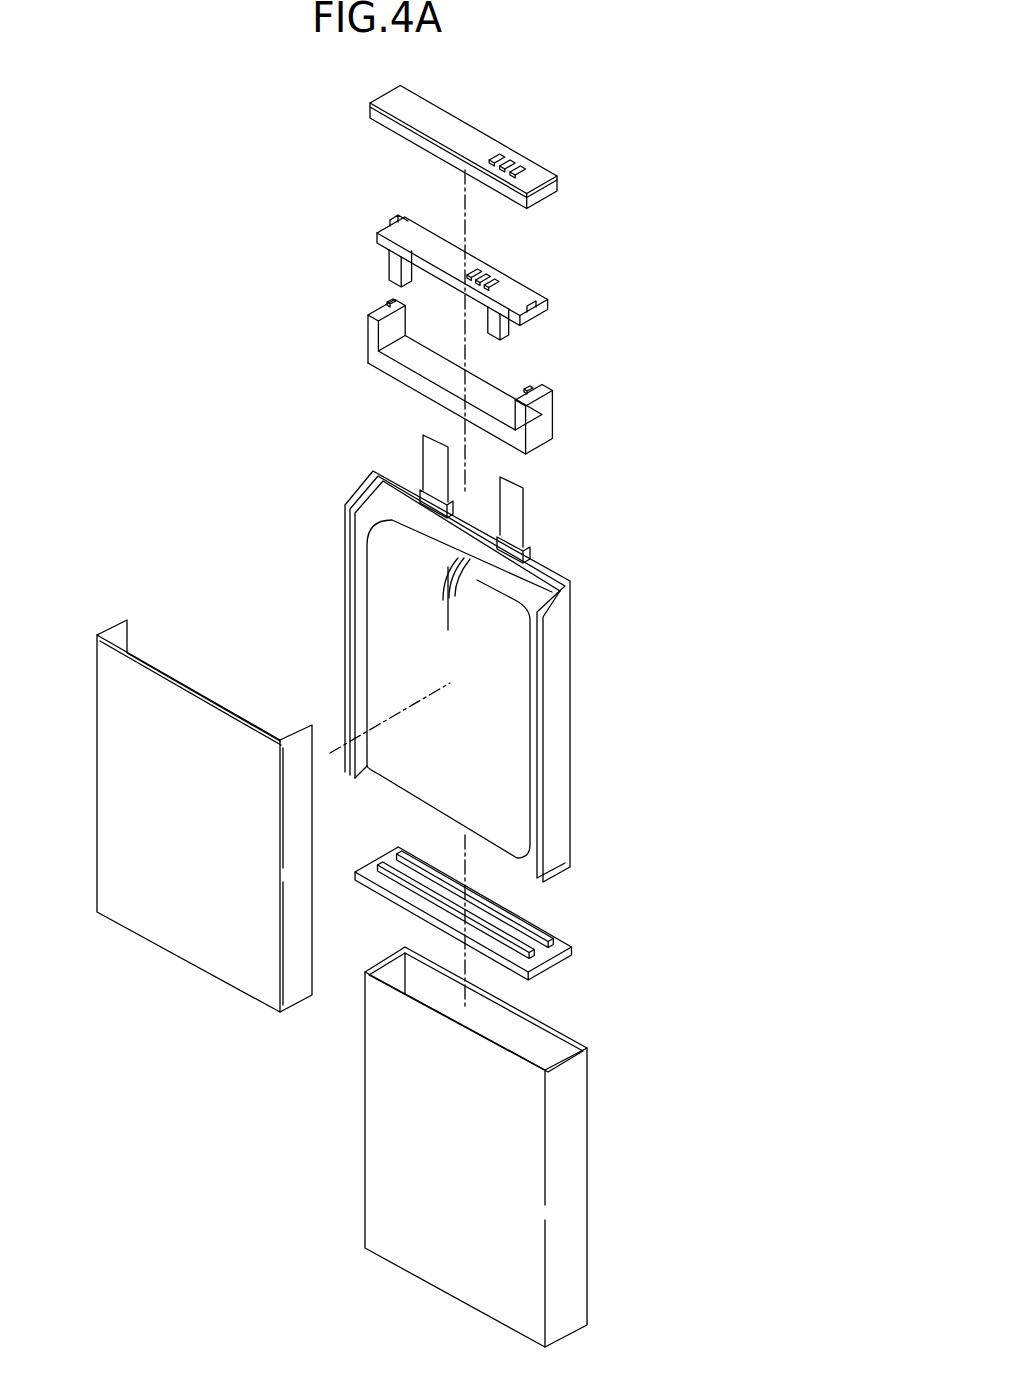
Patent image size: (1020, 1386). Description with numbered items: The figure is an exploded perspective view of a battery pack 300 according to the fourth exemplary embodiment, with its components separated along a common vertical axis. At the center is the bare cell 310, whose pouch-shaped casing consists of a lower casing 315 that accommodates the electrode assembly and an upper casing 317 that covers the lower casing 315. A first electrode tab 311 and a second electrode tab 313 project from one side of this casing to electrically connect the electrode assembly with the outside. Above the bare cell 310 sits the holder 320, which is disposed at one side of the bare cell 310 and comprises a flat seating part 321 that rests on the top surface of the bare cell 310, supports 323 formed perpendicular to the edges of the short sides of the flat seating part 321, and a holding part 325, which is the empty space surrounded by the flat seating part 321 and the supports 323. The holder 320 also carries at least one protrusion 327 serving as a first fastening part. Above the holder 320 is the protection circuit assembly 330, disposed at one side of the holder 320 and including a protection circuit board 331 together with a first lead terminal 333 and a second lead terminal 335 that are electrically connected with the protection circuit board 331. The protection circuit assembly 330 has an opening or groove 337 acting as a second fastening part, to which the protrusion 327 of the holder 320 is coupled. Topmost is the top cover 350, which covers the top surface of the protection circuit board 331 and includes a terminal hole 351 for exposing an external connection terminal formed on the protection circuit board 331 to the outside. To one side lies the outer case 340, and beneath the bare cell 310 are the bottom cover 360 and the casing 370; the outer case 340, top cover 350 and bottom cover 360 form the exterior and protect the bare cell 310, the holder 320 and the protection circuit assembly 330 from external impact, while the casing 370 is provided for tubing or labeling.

The battery pack 300 is at (182, 182).
The bare cell 310 is at (330, 580).
The first electrode tab 311 is at (430, 452).
The second electrode tab 313 is at (513, 502).
The lower casing 315 is at (447, 524).
The upper casing 317 is at (548, 567).
The holder 320 is at (358, 356).
The flat seating part 321 is at (408, 376).
The supports 323 is at (377, 325).
The holding part 325 is at (520, 370).
The protrusion 327 is at (390, 302).
The protection circuit assembly 330 is at (368, 210).
The protection circuit board 331 is at (417, 225).
The first lead terminal 333 is at (392, 261).
The second lead terminal 335 is at (494, 326).
The opening or groove 337 is at (537, 298).
The outer case 340 is at (127, 735).
The top cover 350 is at (450, 117).
The terminal hole 351 is at (520, 161).
The bottom cover 360 is at (543, 957).
The casing 370 is at (573, 1098).